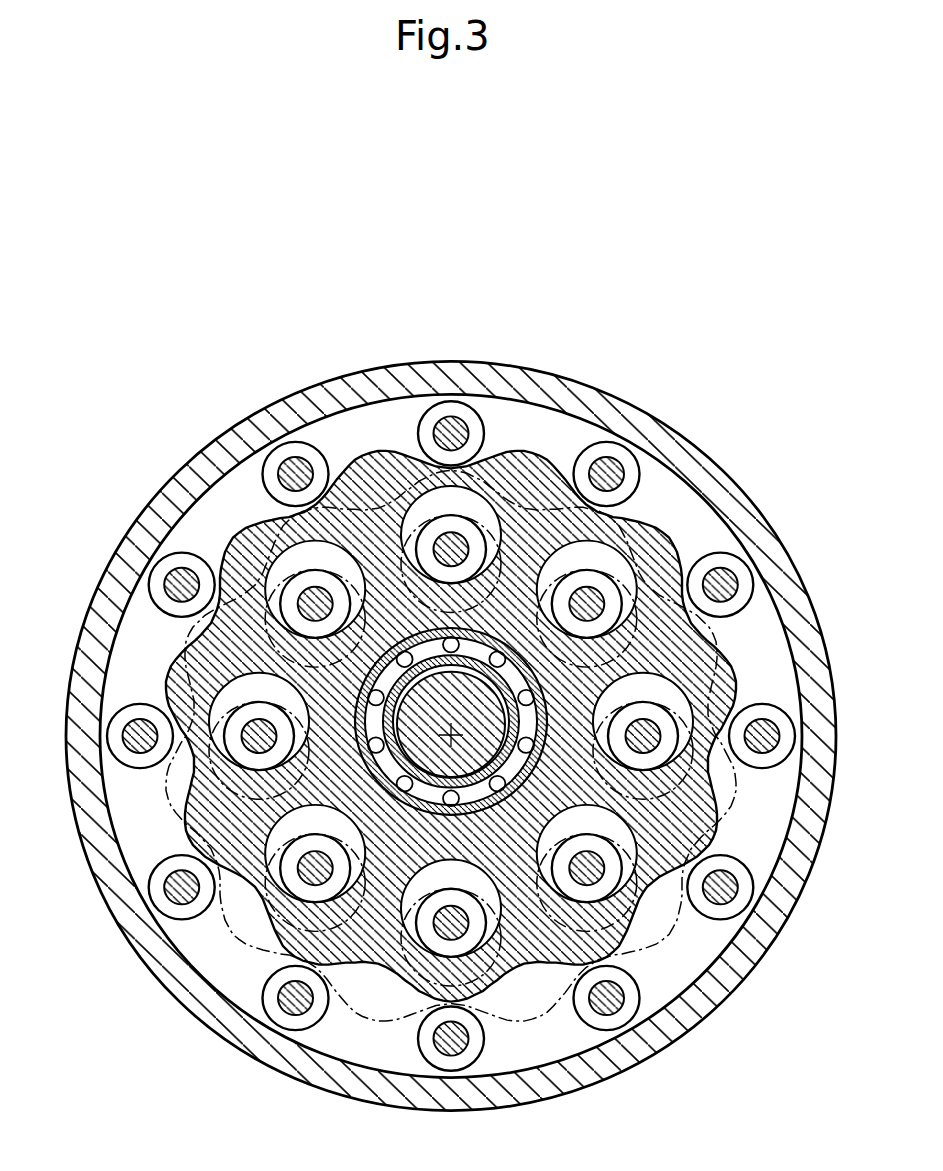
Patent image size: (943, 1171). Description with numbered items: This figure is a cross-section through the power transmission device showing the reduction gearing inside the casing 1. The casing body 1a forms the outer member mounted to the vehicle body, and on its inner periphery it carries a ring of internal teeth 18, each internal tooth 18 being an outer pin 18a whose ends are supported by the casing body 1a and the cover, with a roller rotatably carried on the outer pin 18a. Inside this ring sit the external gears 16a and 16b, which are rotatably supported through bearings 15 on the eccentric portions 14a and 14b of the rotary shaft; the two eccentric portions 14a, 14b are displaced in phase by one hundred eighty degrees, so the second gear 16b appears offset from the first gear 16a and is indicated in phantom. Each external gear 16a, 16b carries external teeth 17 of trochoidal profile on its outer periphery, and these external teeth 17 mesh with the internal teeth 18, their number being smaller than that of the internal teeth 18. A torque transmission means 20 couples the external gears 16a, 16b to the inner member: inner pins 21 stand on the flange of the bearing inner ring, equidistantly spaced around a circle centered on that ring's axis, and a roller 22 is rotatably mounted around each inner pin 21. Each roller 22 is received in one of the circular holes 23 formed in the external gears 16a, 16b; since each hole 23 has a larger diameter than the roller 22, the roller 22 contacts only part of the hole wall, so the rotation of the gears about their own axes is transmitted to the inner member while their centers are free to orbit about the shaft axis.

The casing 1 is at (215, 441).
The casing body 1a is at (152, 507).
The eccentric portion 14a is at (372, 746).
The eccentric portion 14b is at (265, 878).
The bearing 15 is at (380, 652).
The external gear 16a is at (677, 533).
The external gear 16b is at (773, 597).
The external teeth 17 is at (651, 532).
The internal teeth 18 is at (478, 403).
The outer pin 18a is at (470, 395).
The torque transmission means 20 is at (265, 895).
The inner pins 21 is at (583, 592).
The rollers 22 is at (330, 890).
The circular holes 23 is at (528, 740).